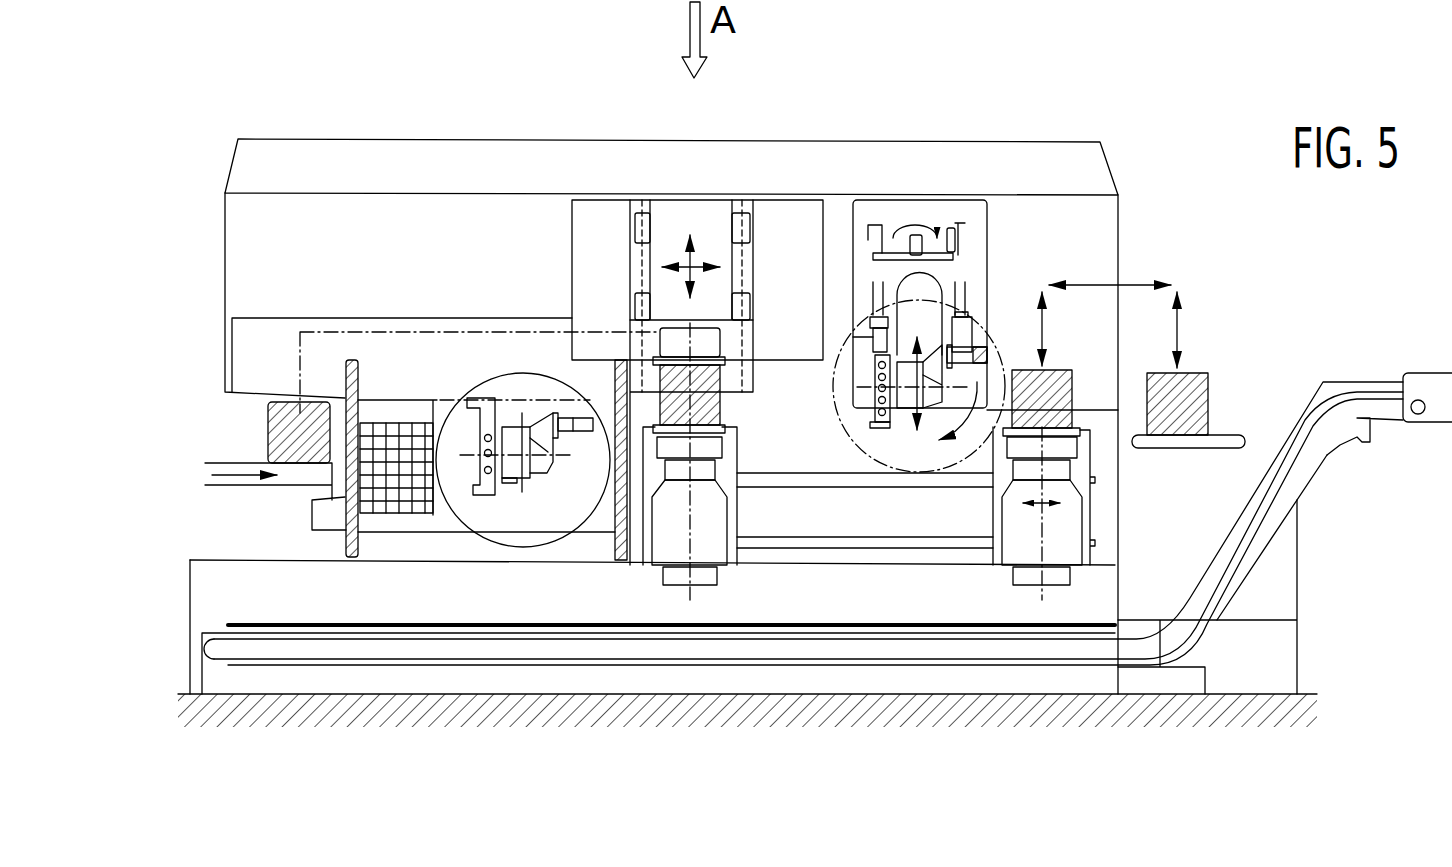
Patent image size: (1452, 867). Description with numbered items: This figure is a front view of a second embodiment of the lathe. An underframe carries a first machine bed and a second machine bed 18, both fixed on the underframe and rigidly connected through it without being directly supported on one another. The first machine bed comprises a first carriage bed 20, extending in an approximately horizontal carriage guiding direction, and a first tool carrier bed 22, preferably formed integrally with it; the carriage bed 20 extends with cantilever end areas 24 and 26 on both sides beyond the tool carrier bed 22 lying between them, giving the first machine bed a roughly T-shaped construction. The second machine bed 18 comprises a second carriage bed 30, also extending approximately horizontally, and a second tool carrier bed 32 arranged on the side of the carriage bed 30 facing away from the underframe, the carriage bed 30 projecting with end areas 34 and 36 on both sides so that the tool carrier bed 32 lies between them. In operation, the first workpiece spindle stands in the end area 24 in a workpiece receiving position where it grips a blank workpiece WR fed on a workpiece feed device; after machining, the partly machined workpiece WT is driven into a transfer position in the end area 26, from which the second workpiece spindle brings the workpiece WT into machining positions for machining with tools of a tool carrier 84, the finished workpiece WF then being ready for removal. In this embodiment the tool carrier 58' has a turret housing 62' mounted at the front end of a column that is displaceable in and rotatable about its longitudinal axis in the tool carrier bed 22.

The second machine bed 18 is at (994, 332).
The first carriage bed 20 is at (395, 376).
The first tool carrier bed 22 is at (585, 512).
The cantilever end area 24 is at (253, 358).
The cantilever end area 26 is at (757, 327).
The second carriage bed 30 is at (925, 515).
The second tool carrier bed 32 is at (962, 215).
The end area 34 is at (640, 567).
The end area 36 is at (1103, 447).
The tool carrier 58' is at (437, 593).
The turret housing 62' is at (539, 602).
The tool carrier 84 is at (928, 332).
The blank workpiece WR is at (283, 440).
The partly machined workpiece WT is at (657, 350).
The finished workpiece WF is at (1208, 387).